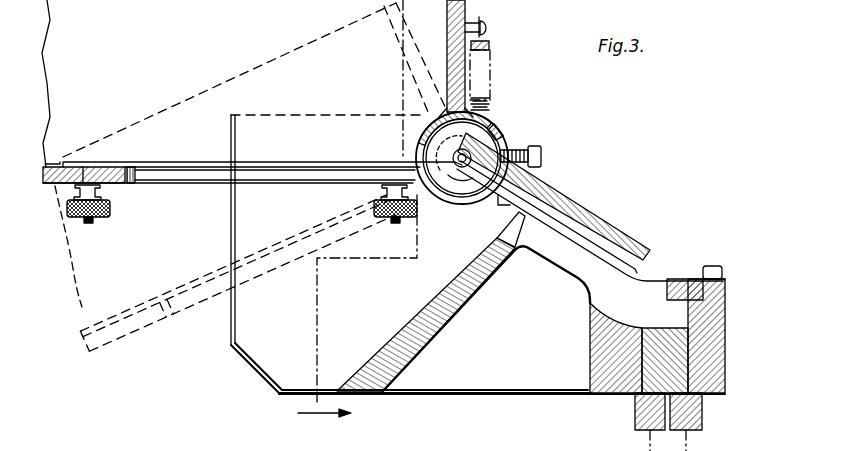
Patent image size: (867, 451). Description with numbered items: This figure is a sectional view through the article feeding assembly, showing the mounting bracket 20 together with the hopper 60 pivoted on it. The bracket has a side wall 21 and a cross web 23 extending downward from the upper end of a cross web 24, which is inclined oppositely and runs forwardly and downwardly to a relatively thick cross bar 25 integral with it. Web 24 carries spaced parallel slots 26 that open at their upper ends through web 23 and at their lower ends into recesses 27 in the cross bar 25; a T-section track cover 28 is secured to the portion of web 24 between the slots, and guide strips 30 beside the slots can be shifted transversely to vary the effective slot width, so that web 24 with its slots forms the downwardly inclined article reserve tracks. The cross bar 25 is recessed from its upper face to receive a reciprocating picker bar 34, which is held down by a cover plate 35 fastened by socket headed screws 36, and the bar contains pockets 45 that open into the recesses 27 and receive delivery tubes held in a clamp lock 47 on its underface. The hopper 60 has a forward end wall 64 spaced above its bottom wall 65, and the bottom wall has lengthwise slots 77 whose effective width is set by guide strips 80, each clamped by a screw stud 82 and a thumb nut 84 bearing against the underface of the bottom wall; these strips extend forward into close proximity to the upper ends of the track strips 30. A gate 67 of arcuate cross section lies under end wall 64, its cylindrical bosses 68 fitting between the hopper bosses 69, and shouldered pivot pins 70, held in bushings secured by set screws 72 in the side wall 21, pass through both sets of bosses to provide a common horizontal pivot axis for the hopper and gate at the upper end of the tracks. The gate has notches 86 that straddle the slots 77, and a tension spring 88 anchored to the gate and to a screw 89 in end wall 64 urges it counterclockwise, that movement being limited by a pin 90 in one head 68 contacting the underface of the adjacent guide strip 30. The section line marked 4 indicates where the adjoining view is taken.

The section line 4- 4 is at (324, 423).
The mounting bracket 20 is at (242, 374).
The side wall 21 is at (243, 241).
The cross web 23 is at (420, 308).
The cross web 24 is at (550, 269).
The cross bar 25 is at (718, 330).
The slot 26 is at (574, 270).
The recess 27 is at (600, 308).
The track cover 28 is at (603, 222).
The guide strip 30 is at (636, 272).
The picker bar 34 is at (700, 297).
The cover plate 35 is at (725, 278).
The socket headed screw 36 is at (716, 266).
The bore or pocket 45 is at (688, 363).
The clamp lock 47 is at (640, 415).
The hopper 60 is at (244, 72).
The end wall 64 is at (419, 449).
The bottom wall 65 is at (55, 163).
The gate 67 is at (424, 121).
The cylindrical end wall or boss 68 is at (454, 190).
The cylindrical boss 69 is at (494, 139).
The pivot pin 70 is at (490, 133).
The set screw 72 is at (541, 157).
The lengthwise slot 77 is at (157, 182).
The guide strip 80 is at (173, 161).
The screw stud 82 is at (90, 224).
The thumb nut 84 is at (110, 214).
The notch 86 is at (414, 150).
The tension spring 88 is at (490, 107).
The screw 89 is at (493, 23).
The pin 90 is at (500, 207).